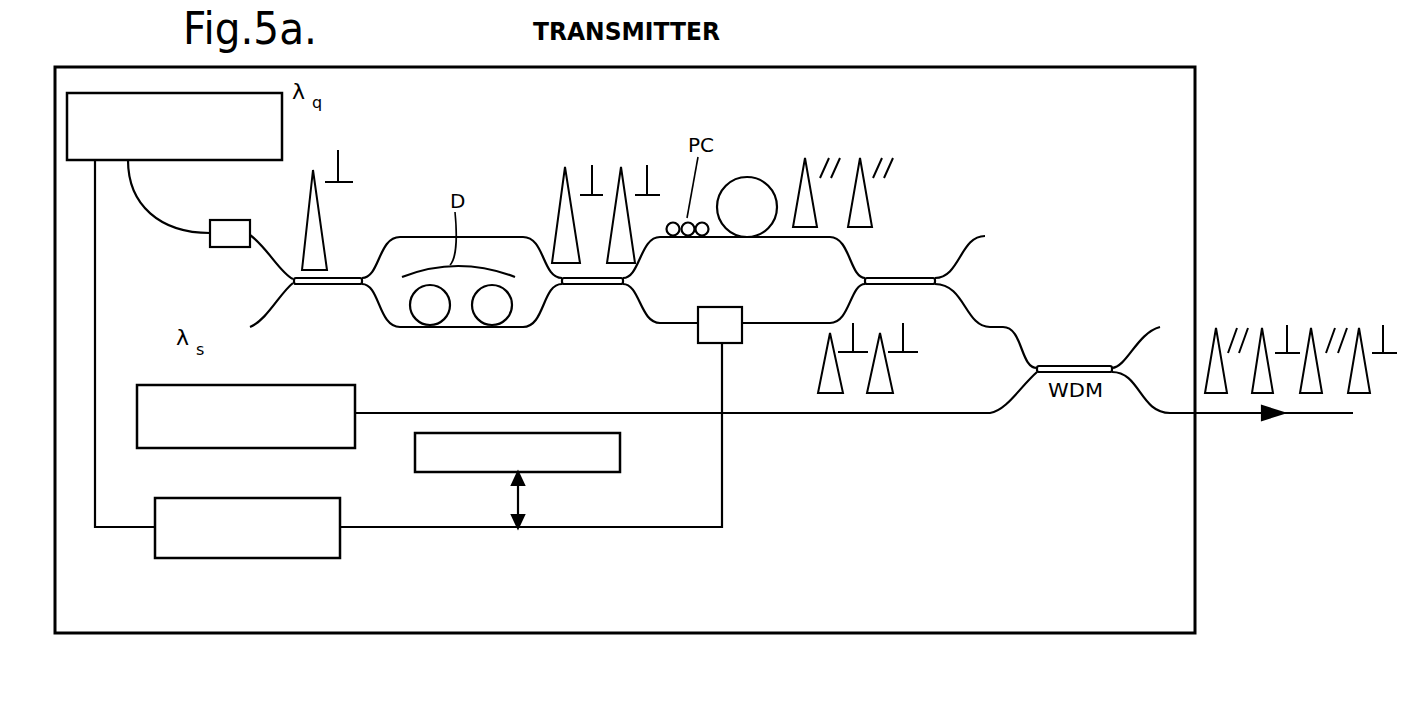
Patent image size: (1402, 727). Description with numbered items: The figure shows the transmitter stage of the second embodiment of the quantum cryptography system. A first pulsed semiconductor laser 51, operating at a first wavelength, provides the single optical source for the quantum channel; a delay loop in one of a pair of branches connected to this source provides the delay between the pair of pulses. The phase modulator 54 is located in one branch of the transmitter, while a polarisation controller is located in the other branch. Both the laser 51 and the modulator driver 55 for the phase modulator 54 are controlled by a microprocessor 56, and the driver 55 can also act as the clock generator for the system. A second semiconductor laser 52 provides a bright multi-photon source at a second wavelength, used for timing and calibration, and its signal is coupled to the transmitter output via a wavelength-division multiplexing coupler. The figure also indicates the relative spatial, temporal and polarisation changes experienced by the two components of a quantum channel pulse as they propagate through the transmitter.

The first pulsed semiconductor laser 51 is at (210, 160).
The second semiconductor laser 52 is at (357, 407).
The phase modulator 54 is at (708, 344).
The modulator driver 55 is at (343, 517).
The microprocessor 56 is at (620, 450).